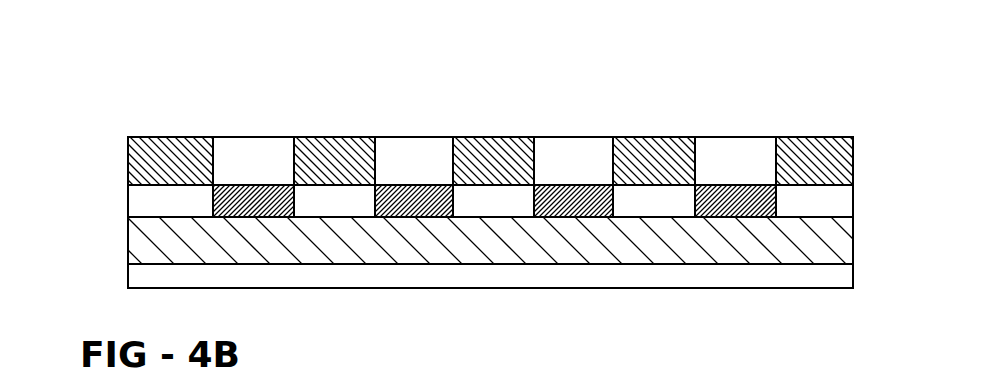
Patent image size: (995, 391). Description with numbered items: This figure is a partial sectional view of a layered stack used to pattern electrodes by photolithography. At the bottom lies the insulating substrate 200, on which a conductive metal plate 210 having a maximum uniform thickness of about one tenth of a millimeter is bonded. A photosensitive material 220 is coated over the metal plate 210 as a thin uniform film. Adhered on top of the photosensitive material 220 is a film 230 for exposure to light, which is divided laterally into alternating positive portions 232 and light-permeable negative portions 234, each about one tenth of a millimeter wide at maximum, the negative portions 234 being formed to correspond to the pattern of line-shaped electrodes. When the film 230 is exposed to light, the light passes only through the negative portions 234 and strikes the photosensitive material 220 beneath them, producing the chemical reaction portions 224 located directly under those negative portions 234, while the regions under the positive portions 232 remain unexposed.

The insulating substrate 200 is at (135, 275).
The conductive metal plate 210 is at (127, 238).
The photosensitive material 220 is at (127, 208).
The chemical reaction portions 224 is at (278, 264).
The film for exposure to light 230 is at (127, 162).
The positive portions 232 is at (175, 136).
The negative portions 234 is at (252, 147).